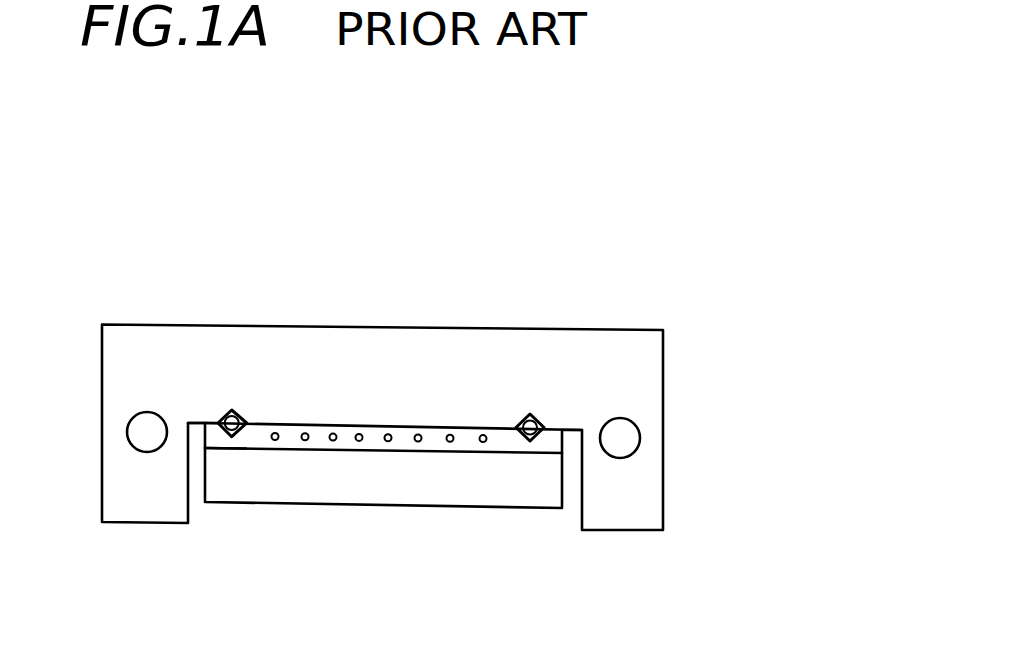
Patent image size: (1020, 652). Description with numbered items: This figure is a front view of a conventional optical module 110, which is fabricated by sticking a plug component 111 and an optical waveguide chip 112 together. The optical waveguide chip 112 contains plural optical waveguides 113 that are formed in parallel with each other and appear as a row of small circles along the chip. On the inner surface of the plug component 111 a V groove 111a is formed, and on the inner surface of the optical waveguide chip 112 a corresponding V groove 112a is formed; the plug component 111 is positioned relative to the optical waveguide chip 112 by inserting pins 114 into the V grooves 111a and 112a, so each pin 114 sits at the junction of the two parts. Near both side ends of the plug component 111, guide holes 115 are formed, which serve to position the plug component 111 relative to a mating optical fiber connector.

The optical module 110 is at (136, 287).
The plug component 111 is at (606, 340).
The V groove 111a is at (233, 408).
The optical waveguide chip 112 is at (395, 497).
The V groove 112a is at (242, 437).
The optical waveguide 113 is at (305, 434).
The pin 114 is at (527, 426).
The guide hole 115 is at (147, 447).